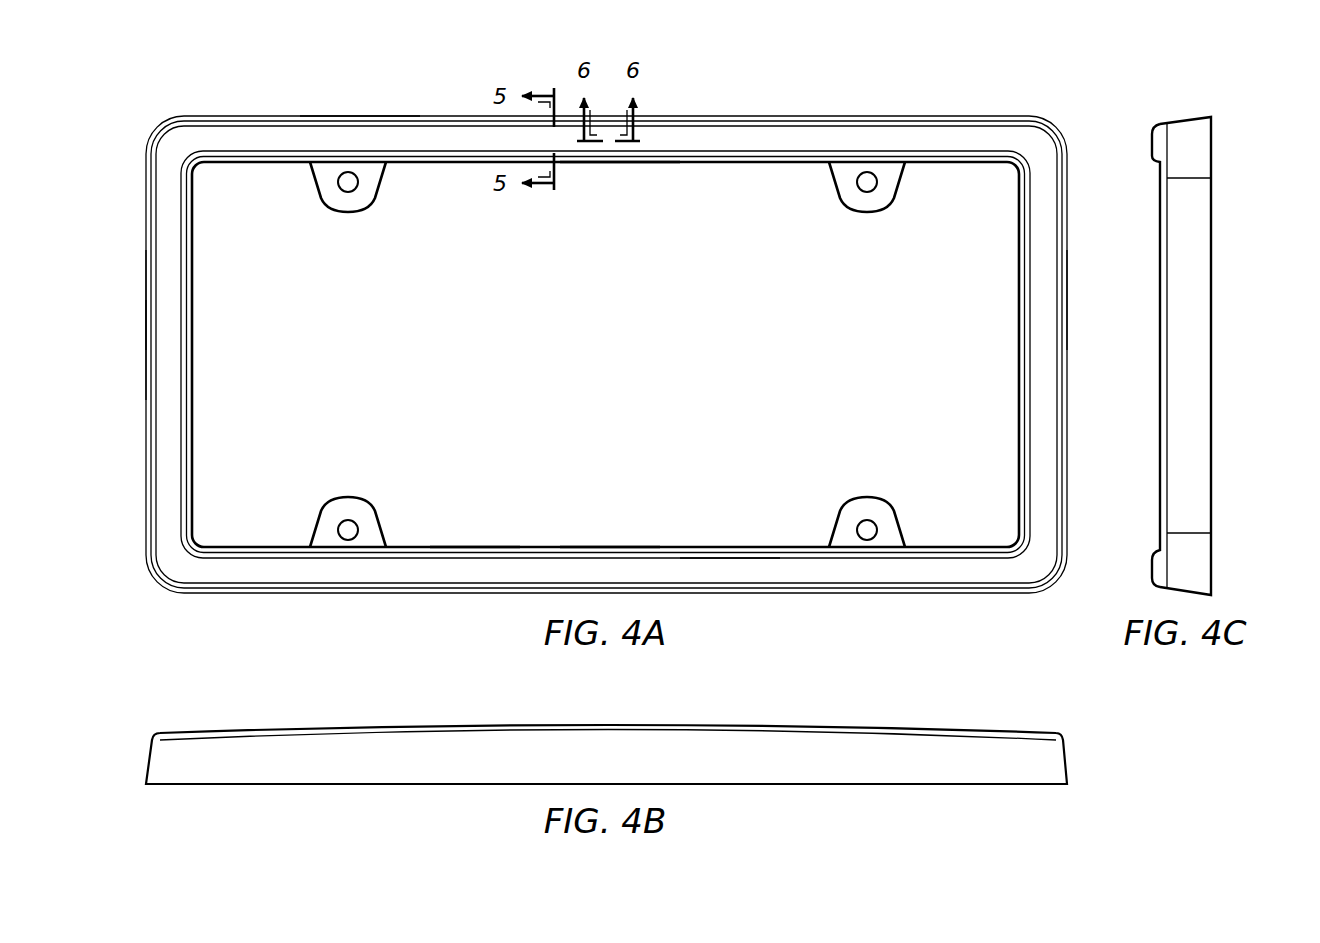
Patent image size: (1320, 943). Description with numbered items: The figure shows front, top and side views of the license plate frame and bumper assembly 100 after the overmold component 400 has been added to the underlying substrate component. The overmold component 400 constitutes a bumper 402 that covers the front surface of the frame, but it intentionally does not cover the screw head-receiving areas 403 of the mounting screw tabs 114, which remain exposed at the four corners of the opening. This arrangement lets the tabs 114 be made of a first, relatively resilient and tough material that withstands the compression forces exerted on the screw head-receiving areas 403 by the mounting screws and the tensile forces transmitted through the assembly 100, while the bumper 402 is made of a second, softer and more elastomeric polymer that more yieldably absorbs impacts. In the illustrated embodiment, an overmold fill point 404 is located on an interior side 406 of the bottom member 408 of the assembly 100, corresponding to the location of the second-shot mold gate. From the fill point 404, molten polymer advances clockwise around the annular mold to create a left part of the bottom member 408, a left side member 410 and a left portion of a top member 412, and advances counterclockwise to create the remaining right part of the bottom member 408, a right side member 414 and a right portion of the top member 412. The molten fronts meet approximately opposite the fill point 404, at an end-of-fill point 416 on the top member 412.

In FIG. 4A, the assembly 100 is at (278, 86).
In FIG. 4B, the assembly 100 is at (928, 692).
In FIG. 4C, the assembly 100 is at (1207, 88).
In FIG. 4A, the overmold component 400 is at (794, 116).
In FIG. 4B, the overmold component 400 is at (805, 727).
In FIG. 4C, the overmold component 400 is at (1214, 230).
In FIG. 4A, the bumper 402 is at (172, 388).
In FIG. 4B, the bumper 402 is at (850, 760).
In FIG. 4C, the bumper 402 is at (1190, 395).
In FIG. 4A, the screw head-receiving areas 403 is at (327, 187).
In FIG. 4A, the mounting screw tabs 114 is at (333, 213).
In FIG. 4A, the overmold fill point 404 is at (608, 547).
In FIG. 4A, the interior side 406 is at (716, 570).
In FIG. 4A, the bottom member 408 is at (460, 562).
In FIG. 4A, the left side member 410 is at (146, 303).
In FIG. 4A, the top member 412 is at (365, 116).
In FIG. 4A, the right side member 414 is at (1067, 305).
In FIG. 4A, the end-of-fill point 416 is at (610, 172).